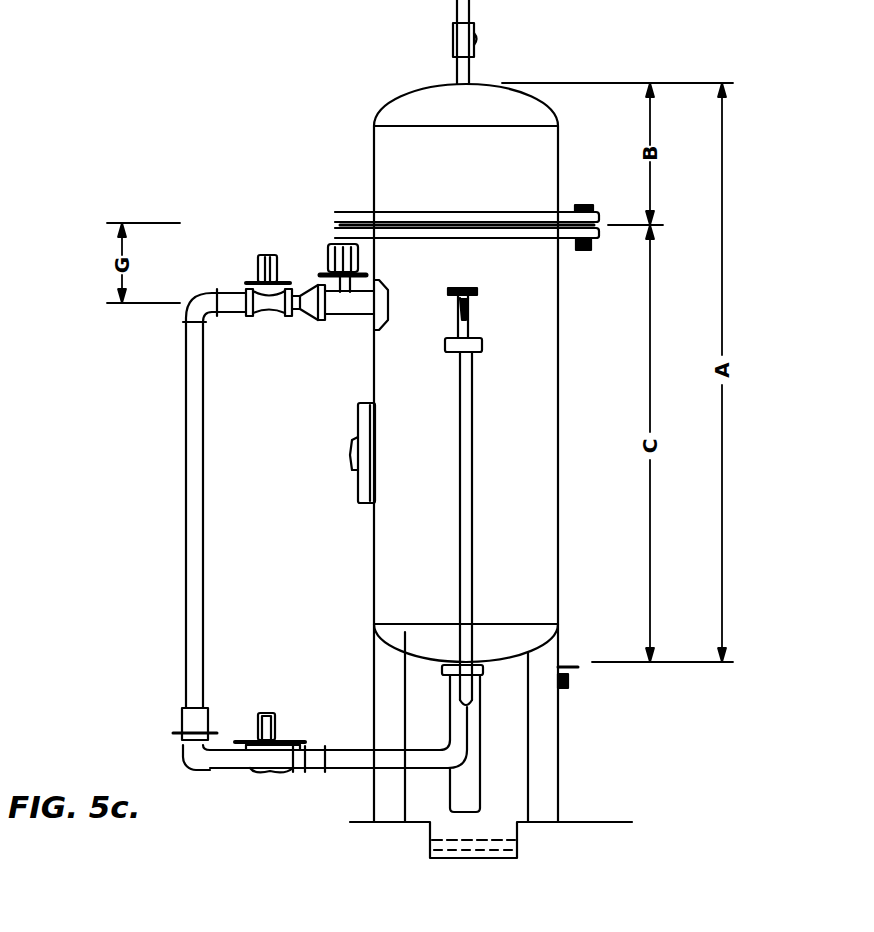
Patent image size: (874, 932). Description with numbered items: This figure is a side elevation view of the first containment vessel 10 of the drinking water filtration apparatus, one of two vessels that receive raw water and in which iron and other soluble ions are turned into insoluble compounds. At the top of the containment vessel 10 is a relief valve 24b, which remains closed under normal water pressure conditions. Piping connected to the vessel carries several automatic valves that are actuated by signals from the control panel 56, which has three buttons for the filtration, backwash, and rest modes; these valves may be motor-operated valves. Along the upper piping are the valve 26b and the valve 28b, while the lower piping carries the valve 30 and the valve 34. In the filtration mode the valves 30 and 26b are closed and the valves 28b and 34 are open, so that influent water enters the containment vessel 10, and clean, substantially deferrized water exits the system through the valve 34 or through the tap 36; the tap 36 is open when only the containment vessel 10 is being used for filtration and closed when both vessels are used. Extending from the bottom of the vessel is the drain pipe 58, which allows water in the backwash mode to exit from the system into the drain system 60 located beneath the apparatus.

The first containment vessel 10 is at (408, 112).
The relief valve 24b is at (479, 27).
The valve 26b is at (326, 244).
The valve 28b is at (265, 256).
The valve 30 is at (206, 718).
The valve 34 is at (279, 726).
The tap 36 is at (470, 312).
The control panel 56 is at (358, 488).
The drain pipe 58 is at (481, 780).
The drain system 60 is at (505, 860).